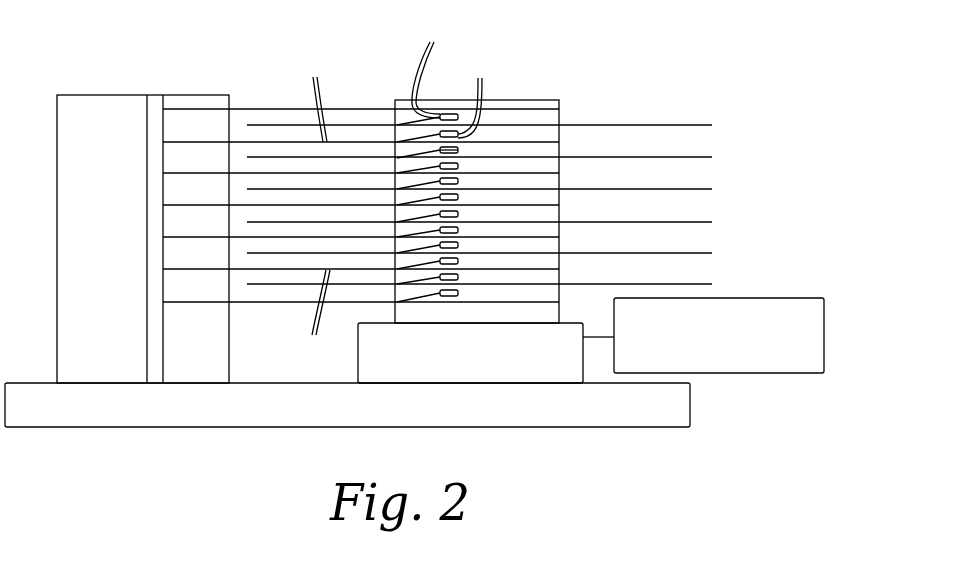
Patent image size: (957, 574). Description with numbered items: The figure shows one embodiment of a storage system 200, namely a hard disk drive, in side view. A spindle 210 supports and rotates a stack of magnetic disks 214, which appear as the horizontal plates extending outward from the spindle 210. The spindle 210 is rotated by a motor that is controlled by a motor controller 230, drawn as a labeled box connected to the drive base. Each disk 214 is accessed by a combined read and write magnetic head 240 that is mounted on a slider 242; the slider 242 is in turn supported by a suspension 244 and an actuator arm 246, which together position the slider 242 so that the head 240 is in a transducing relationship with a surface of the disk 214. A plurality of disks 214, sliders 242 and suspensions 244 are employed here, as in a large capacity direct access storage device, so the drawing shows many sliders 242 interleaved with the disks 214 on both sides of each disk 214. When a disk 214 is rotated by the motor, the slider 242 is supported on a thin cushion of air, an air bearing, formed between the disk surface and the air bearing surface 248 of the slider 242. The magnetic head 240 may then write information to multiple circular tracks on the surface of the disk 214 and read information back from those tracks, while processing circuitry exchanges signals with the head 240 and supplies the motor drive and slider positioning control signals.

The storage system 200 is at (680, 60).
The spindle 210 is at (535, 98).
The magnetic disk 214 is at (712, 125).
The motor controller 230 is at (788, 375).
The combined read and write magnetic head 240 is at (460, 139).
The slider 242 is at (479, 94).
The suspension 244 is at (431, 67).
The actuator arm 246 is at (306, 207).
The air bearing surface 248 is at (464, 185).